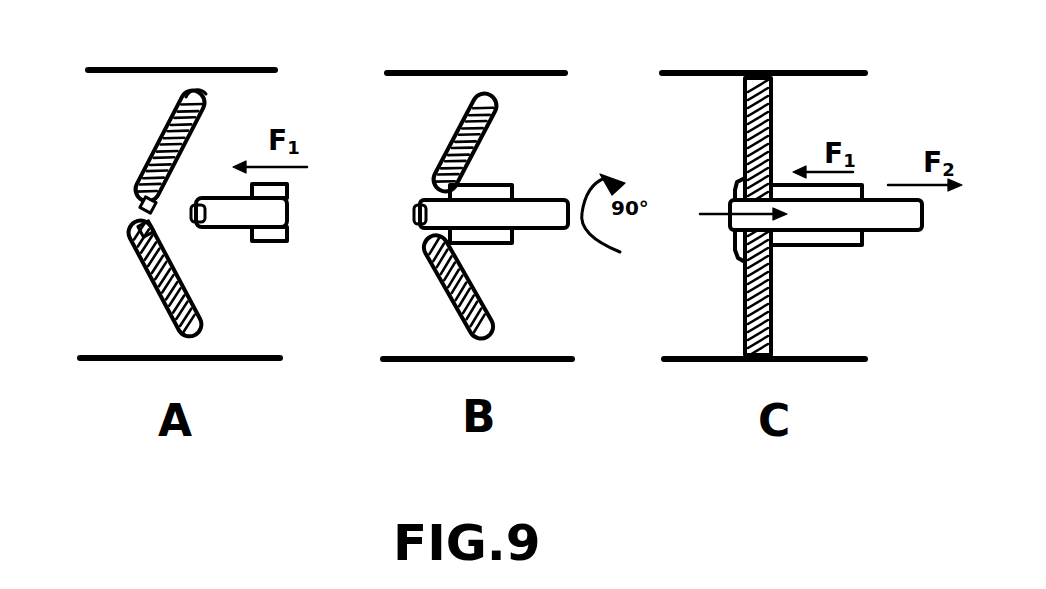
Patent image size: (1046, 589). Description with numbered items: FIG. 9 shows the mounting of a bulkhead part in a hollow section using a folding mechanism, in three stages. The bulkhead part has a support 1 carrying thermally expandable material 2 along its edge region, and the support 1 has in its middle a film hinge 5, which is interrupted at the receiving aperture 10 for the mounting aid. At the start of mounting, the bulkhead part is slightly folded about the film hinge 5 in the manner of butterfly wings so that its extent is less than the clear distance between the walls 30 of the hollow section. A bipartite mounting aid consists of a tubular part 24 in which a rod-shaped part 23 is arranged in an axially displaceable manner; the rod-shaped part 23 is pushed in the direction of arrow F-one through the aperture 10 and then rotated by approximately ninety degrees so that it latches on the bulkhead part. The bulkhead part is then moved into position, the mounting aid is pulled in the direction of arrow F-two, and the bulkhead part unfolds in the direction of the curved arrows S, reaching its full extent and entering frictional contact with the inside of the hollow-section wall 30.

The wall of the hollow section 30 is at (225, 70).
The support 1 is at (170, 123).
The thermally expandable material 2 is at (187, 92).
The receiving aperture 10 is at (138, 210).
The film hinge 5 is at (163, 223).
The rod-shaped part 23 is at (230, 212).
The tubular part 24 is at (280, 240).
The curved arrows S is at (777, 108).